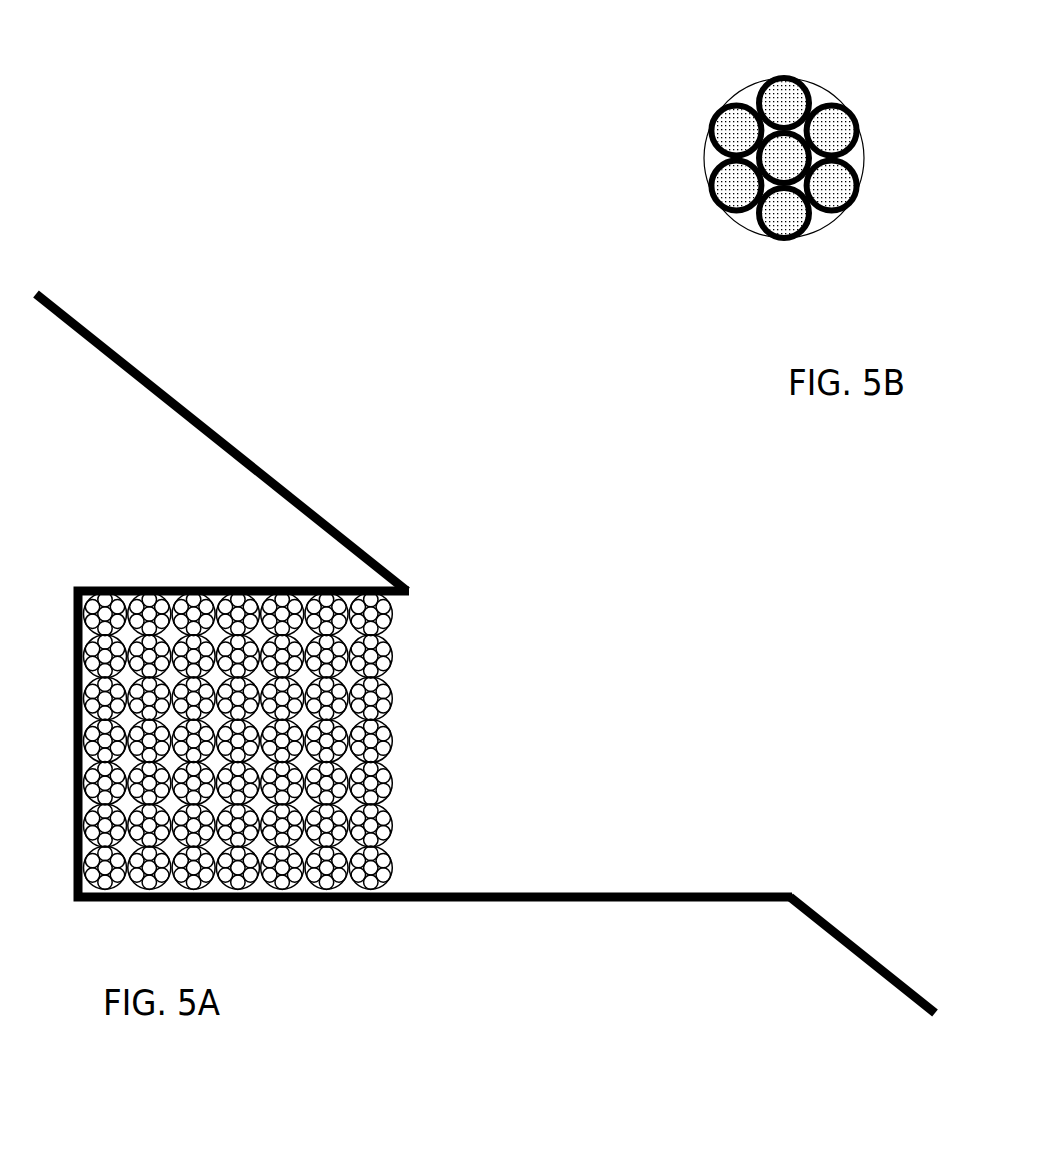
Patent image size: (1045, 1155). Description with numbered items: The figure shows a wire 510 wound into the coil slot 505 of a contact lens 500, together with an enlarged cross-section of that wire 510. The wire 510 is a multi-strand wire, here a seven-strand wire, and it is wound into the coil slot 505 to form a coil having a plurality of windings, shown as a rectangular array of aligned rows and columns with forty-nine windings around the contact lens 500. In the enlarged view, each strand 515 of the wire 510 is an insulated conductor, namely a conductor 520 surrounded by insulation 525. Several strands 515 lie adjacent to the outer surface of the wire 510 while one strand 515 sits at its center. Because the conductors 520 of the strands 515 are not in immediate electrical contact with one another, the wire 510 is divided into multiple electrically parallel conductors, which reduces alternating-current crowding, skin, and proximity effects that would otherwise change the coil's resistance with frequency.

In FIG. 5A, the contact lens 500 is at (125, 357).
In FIG. 5A, the coil slot 505 is at (550, 607).
In FIG. 5A, the wire 510 is at (393, 653).
In FIG. 5B, the wire 510 is at (716, 101).
In FIG. 5B, the strand 515 is at (644, 204).
In FIG. 5B, the conductor 520 is at (780, 220).
In FIG. 5B, the insulation 525 is at (762, 212).